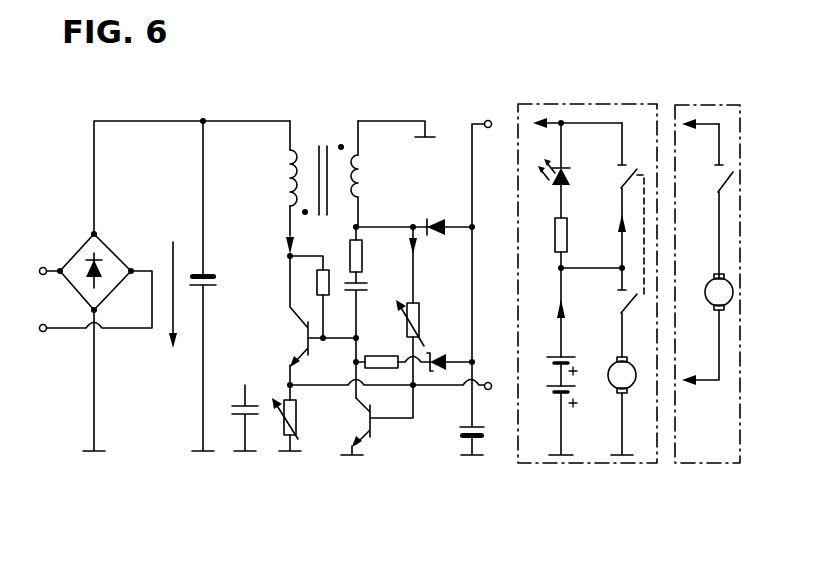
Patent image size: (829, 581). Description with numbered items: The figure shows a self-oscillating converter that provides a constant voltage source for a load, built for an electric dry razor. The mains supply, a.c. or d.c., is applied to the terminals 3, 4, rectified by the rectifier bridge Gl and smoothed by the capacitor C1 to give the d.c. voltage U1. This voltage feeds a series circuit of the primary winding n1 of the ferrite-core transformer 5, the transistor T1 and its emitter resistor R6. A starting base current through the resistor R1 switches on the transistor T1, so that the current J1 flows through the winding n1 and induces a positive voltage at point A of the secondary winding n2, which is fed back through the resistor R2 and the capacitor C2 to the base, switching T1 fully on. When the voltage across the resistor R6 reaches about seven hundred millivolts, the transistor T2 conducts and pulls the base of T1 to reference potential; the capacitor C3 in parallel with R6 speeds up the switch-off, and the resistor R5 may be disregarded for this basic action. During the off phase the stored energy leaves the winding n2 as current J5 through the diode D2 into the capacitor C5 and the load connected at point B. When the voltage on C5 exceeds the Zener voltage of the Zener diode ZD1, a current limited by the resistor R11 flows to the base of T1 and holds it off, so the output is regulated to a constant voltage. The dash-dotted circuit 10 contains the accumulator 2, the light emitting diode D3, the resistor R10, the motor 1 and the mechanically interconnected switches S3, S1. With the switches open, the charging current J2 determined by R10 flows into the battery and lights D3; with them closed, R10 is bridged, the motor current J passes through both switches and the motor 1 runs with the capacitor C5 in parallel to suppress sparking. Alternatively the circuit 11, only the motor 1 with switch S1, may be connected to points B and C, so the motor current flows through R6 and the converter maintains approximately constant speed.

The terminal 3 is at (43, 272).
The terminal 4 is at (89, 305).
The rectifier bridge Gl is at (80, 252).
The d.c. voltage U1 is at (174, 284).
The capacitor C1 is at (208, 274).
The primary winding n1 is at (283, 184).
The transformer 5 is at (323, 146).
The secondary winding n2 is at (363, 176).
The current I1 J1 is at (286, 243).
The point A is at (360, 226).
The diode D2 is at (433, 218).
The resistor R2 is at (363, 250).
The capacitor C2 is at (360, 294).
The current I5 J5 is at (420, 248).
The resistor R5 is at (420, 318).
The resistor R1 is at (318, 284).
The transistor T1 is at (300, 338).
The resistor R11 is at (379, 368).
The Zener diode ZD1 is at (432, 373).
The point C is at (486, 382).
The resistor R6 is at (297, 421).
The capacitor C3 is at (240, 402).
The transistor T2 is at (372, 433).
The capacitor C5 is at (466, 438).
The point B is at (595, 240).
The circuit 10 is at (537, 466).
The light emitting diode D3 is at (568, 180).
The resistor R10 is at (568, 238).
The charging current J2 is at (558, 305).
The accumulator 2 is at (578, 374).
The switch S3 is at (620, 179).
The motor current I J is at (618, 229).
The control switch S1 is at (716, 178).
The direct current motor 1 is at (706, 298).
The circuit 11 is at (677, 466).